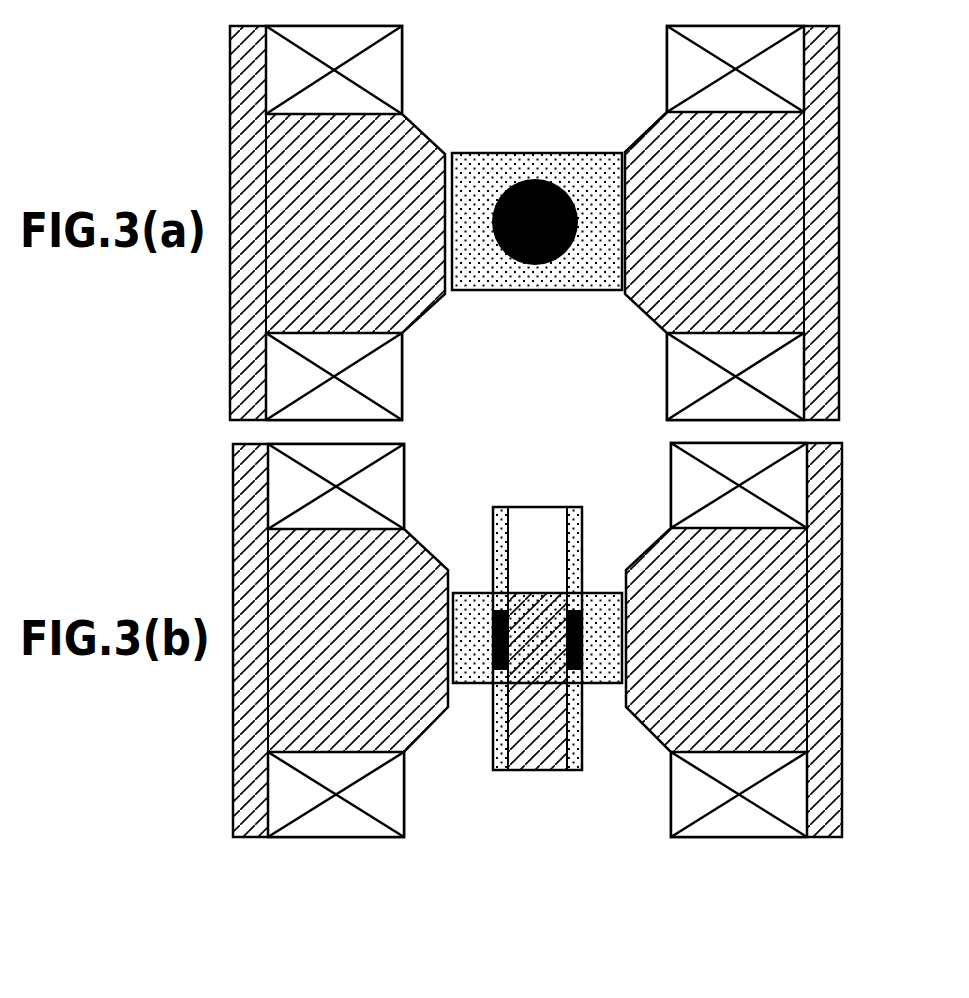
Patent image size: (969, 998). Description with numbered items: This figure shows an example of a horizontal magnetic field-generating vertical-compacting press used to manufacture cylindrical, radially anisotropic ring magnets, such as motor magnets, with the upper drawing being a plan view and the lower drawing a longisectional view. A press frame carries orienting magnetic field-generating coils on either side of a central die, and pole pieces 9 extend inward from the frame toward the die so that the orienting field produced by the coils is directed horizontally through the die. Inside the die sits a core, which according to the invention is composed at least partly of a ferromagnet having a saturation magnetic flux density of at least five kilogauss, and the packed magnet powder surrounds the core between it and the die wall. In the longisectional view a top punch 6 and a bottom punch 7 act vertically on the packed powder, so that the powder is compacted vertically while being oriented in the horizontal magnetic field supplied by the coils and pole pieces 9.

The top punch 6 is at (578, 566).
The bottom punch 7 is at (582, 718).
The pole pieces 9 is at (283, 153).